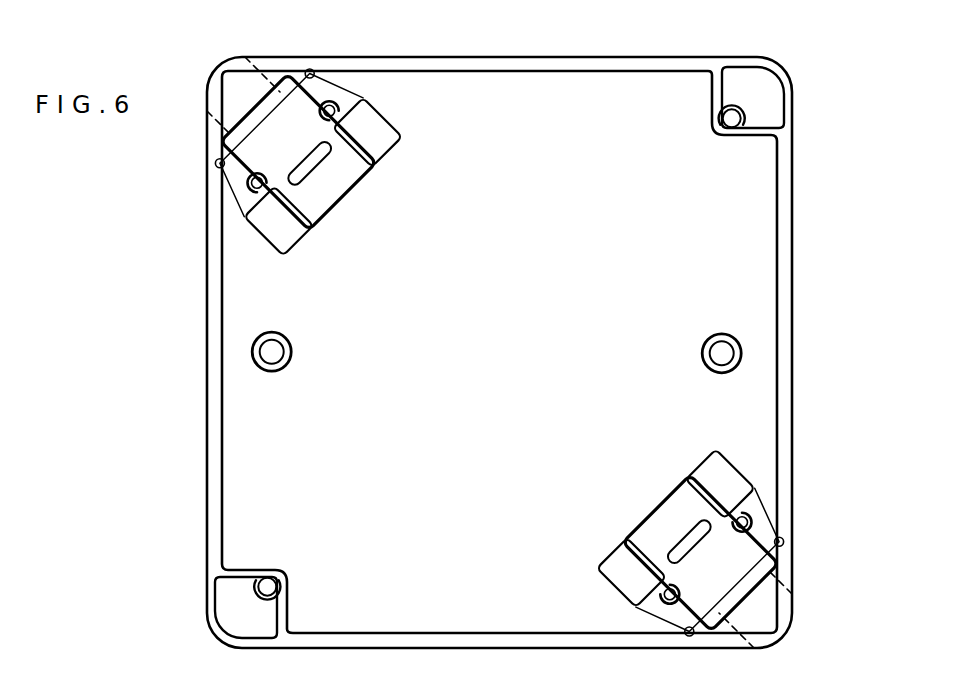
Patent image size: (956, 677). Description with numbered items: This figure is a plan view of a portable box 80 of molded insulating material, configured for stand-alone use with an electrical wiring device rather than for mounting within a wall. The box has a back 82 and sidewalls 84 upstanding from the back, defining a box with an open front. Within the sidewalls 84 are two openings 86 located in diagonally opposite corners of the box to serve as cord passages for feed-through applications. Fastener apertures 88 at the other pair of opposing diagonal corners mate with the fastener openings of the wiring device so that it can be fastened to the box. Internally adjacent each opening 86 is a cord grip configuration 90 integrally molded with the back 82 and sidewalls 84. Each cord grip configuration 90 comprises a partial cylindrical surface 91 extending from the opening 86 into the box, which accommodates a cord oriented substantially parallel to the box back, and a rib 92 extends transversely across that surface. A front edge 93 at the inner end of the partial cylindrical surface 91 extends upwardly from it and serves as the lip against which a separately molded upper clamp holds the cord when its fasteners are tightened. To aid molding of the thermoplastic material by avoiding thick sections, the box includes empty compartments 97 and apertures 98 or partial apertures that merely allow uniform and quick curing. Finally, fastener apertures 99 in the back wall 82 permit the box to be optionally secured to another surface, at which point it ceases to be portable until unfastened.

The portable box 80 is at (649, 56).
The back 82 is at (546, 94).
The sidewalls 84 is at (468, 56).
The opening 86 is at (237, 76).
The fastener apertures 88 is at (725, 129).
The cord grip configuration 90 is at (350, 165).
The partial cylindrical surface 91 is at (316, 218).
The rib 92 is at (316, 152).
The front edge 93 is at (334, 208).
The empty compartments 97 is at (372, 131).
The apertures 98 is at (313, 66).
The fastener apertures 99 is at (288, 365).